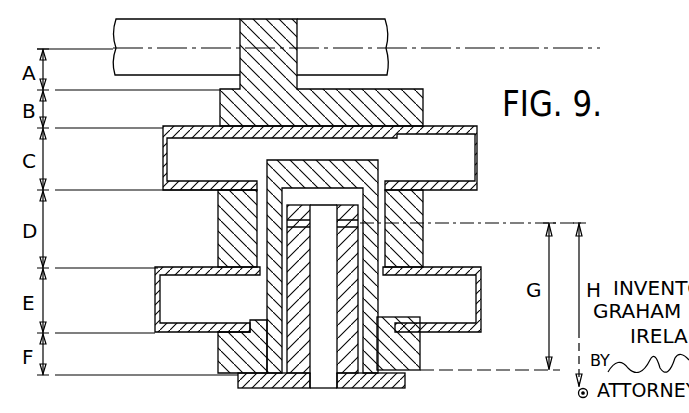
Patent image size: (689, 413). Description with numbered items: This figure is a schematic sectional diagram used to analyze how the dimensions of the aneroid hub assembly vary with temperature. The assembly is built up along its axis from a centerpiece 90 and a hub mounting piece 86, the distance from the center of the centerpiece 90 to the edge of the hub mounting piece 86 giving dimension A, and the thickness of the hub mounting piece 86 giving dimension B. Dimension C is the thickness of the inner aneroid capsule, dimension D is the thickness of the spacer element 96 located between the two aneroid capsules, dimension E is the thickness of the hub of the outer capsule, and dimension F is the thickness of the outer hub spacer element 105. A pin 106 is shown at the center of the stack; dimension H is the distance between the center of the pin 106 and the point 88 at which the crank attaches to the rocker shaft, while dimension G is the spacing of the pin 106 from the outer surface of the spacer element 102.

The centerpiece 90 is at (375, 35).
The hub mounting piece 86 is at (405, 108).
The spacer element 96 is at (407, 236).
The pin 106 is at (327, 215).
The spacer element 102 is at (420, 353).
The outer hub spacer element 105 is at (402, 382).
The point 88 is at (578, 394).